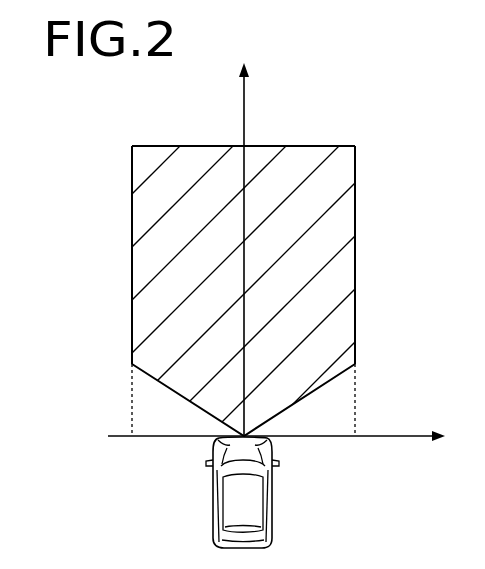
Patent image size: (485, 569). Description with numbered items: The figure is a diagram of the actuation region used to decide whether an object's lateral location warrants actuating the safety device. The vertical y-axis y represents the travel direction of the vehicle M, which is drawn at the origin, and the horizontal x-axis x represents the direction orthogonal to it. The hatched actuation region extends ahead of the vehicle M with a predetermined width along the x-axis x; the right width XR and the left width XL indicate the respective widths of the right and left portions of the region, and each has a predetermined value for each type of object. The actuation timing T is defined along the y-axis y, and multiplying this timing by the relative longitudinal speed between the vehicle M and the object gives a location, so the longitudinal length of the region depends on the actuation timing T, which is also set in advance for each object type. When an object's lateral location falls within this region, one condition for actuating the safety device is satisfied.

The vehicle M is at (270, 505).
The actuation timing T is at (243, 135).
The left width XL is at (129, 304).
The right width XR is at (351, 304).
The x-axis x is at (276, 446).
The y-axis y is at (251, 242).